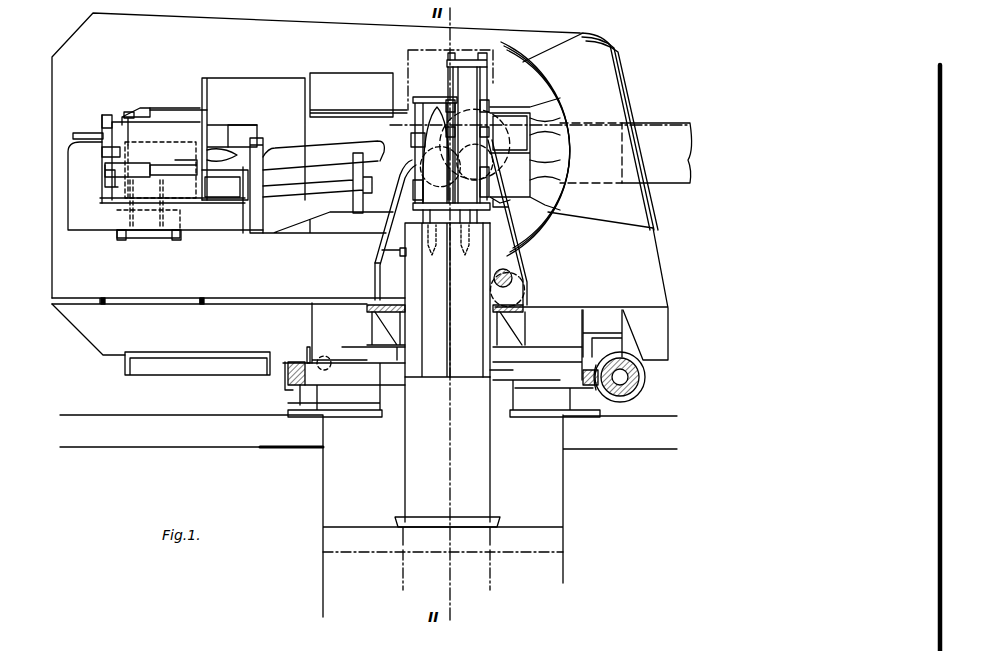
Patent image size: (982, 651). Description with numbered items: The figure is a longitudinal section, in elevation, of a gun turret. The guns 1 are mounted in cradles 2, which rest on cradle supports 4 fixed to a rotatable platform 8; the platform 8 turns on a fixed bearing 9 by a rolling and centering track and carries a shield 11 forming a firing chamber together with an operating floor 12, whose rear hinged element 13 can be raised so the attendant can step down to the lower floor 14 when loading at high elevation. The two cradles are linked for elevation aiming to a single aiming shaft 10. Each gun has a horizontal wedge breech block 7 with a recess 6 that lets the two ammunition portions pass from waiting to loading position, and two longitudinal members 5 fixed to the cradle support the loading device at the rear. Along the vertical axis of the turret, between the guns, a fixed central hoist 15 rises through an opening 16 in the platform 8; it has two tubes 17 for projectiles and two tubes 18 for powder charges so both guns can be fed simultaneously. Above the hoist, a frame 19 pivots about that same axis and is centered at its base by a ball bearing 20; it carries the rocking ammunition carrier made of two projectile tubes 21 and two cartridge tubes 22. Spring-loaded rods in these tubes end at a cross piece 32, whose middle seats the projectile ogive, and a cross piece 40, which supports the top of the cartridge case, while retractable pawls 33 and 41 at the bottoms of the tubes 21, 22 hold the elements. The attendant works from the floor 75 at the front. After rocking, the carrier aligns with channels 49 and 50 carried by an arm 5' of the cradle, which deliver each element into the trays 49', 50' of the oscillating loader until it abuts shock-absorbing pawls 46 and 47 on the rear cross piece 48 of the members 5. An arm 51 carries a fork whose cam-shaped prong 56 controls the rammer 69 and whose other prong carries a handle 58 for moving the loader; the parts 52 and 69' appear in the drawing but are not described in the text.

The guns 1 is at (657, 130).
The cradles 2 is at (505, 125).
The cradle supports 4 is at (375, 272).
The longitudinal members 5 is at (174, 212).
The arm 5' is at (259, 195).
The recess 6 is at (214, 137).
The breech block 7 is at (250, 87).
The rotatable platform 8 is at (310, 323).
The fixed bearing 9 is at (355, 408).
The aiming shaft 10 is at (503, 287).
The shield 11 is at (201, 14).
The operating floor 12 is at (250, 302).
The hinged element 13 is at (175, 298).
The lower floor 14 is at (215, 353).
The fixed central hoist 15 is at (480, 492).
The opening 16 is at (373, 339).
The tubes 17 is at (437, 378).
The tubes 18 is at (467, 380).
The frame 19 is at (497, 232).
The ball bearing 20 is at (400, 251).
The tubes 21 is at (420, 140).
The tubes 22 is at (490, 168).
The cross piece 32 is at (434, 98).
The retractable pawl 33 is at (416, 198).
The cross piece 40 is at (470, 62).
The retractable pawl 41 is at (508, 206).
The shock-absorbing pawl 46 is at (129, 112).
The shock-absorbing pawl 47 is at (105, 178).
The rear cross piece 48 is at (86, 226).
The channel 49 is at (317, 168).
The channel element 49' is at (150, 160).
The channel 50 is at (323, 152).
The channel element 50' is at (174, 149).
The arm 51 is at (148, 236).
The stop 52 is at (120, 240).
The prong 56 is at (106, 115).
The handle 58 is at (86, 133).
The rammer 69 is at (148, 104).
The cover 69' is at (177, 85).
The floor 75 is at (597, 332).